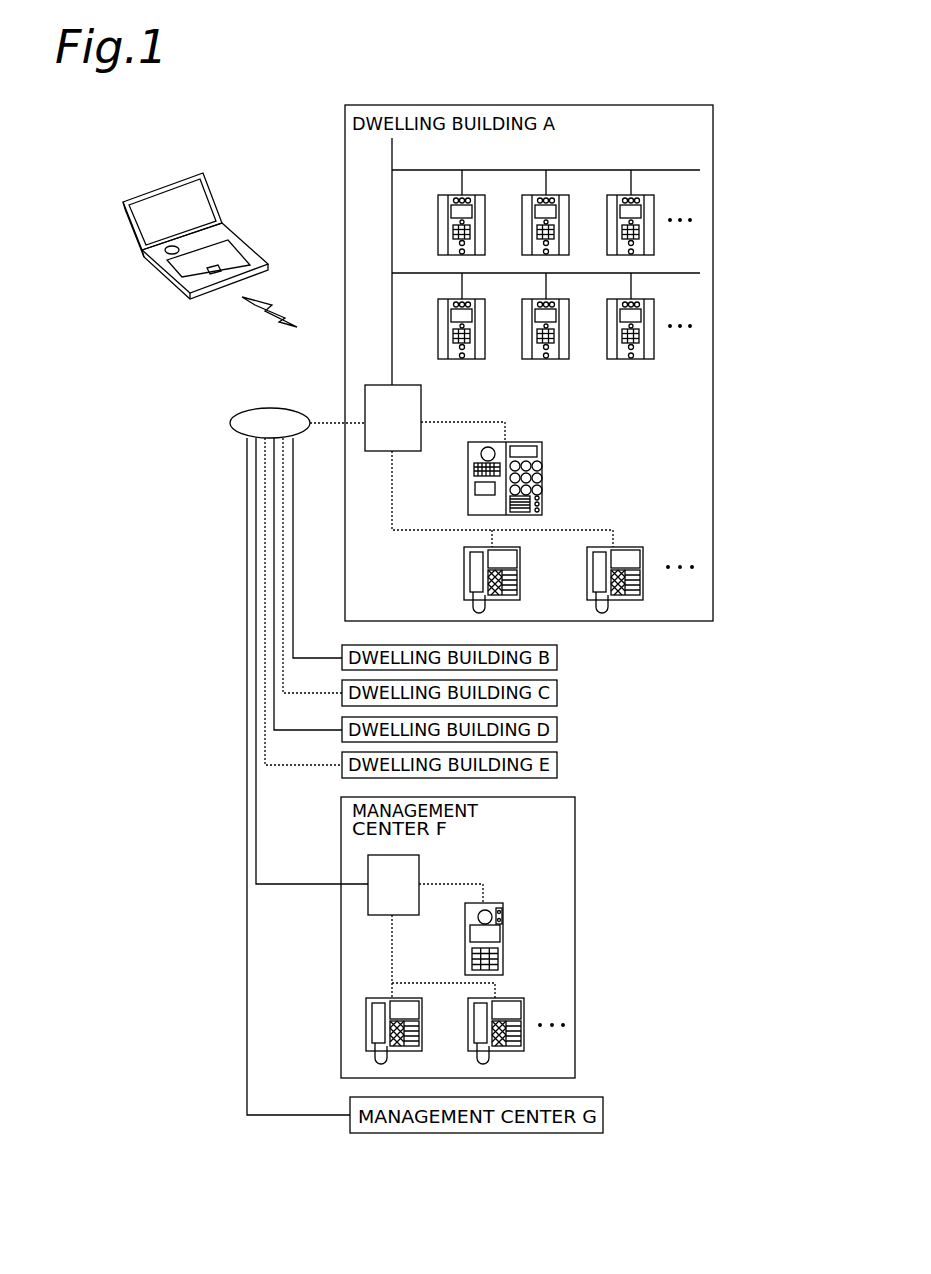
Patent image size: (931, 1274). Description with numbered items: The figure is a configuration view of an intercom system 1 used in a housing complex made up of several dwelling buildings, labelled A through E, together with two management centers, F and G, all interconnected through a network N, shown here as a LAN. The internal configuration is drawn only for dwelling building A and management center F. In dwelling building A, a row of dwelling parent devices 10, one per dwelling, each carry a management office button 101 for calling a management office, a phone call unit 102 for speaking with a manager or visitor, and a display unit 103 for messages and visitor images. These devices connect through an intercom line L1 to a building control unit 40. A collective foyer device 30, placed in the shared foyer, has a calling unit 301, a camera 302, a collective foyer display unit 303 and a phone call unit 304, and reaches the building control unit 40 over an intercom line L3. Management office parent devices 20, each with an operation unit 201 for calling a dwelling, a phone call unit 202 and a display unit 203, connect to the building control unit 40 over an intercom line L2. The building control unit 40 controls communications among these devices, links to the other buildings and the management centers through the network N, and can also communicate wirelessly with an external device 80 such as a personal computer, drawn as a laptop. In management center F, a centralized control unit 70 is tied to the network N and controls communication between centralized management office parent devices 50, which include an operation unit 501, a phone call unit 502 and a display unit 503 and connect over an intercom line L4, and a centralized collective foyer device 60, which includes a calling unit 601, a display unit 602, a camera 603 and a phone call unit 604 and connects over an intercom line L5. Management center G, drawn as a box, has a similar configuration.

The intercom system 1 is at (758, 223).
The dwelling parent device 10 is at (534, 271).
The management office button 101 is at (492, 302).
The phone call unit 102 is at (492, 358).
The display unit 103 is at (434, 300).
The management office parent device 20 is at (546, 575).
The operation unit 201 is at (523, 581).
The phone call unit 202 is at (441, 576).
The display unit 203 is at (523, 553).
The collective foyer device 30 is at (499, 469).
The calling unit 301 is at (538, 481).
The camera 302 is at (481, 452).
The collective foyer display unit 303 is at (528, 446).
The phone call unit 304 is at (468, 470).
The building control unit 40 is at (365, 400).
The centralized management office parent device 50 is at (423, 1015).
The operation unit 501 is at (418, 1050).
The phone call unit 502 is at (333, 1023).
The display unit 503 is at (409, 985).
The centralized collective foyer device 60 is at (482, 913).
The calling unit 601 is at (503, 962).
The display unit 602 is at (503, 935).
The camera 603 is at (478, 918).
The phone call unit 604 is at (502, 912).
The centralized control unit 70 is at (368, 868).
The external device 80 is at (212, 185).
The network N is at (270, 408).
The intercom line L1 is at (392, 338).
The intercom line L2 is at (392, 518).
The intercom line L3 is at (457, 422).
The intercom line L4 is at (392, 925).
The intercom line L5 is at (463, 884).